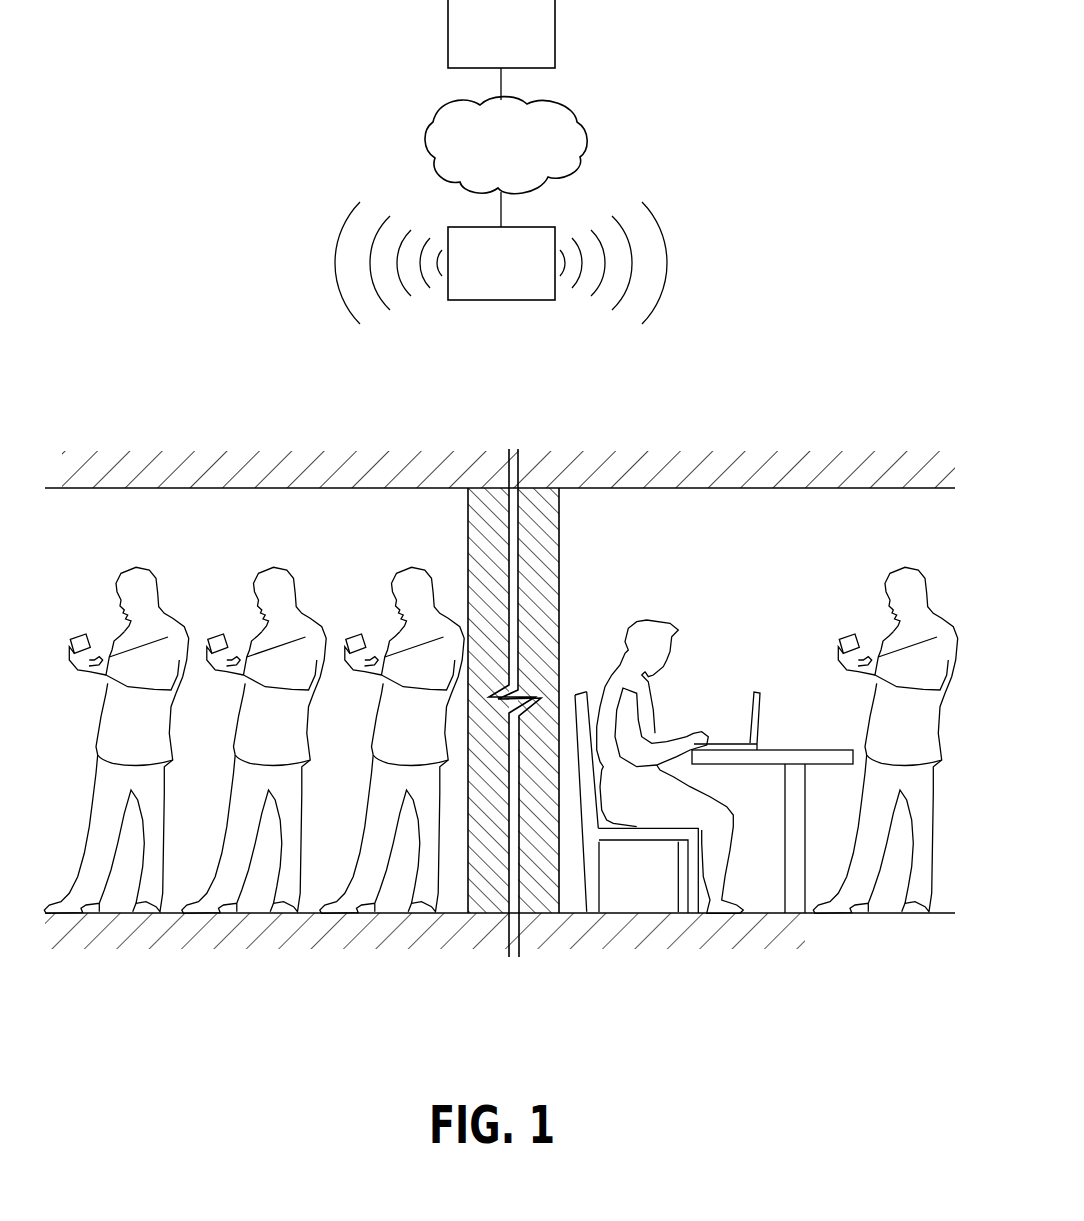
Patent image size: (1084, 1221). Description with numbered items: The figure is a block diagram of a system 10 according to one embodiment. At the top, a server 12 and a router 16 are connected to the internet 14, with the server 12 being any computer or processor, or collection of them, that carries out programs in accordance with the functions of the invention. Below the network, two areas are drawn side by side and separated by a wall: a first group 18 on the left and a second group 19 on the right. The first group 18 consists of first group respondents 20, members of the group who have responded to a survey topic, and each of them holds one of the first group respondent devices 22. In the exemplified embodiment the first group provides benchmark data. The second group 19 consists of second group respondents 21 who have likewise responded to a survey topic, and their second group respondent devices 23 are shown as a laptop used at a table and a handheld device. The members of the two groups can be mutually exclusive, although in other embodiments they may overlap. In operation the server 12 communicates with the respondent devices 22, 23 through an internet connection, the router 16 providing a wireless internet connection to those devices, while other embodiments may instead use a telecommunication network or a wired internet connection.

The system 10 is at (600, 162).
The server 12 is at (501, 34).
The internet 14 is at (506, 145).
The router 16 is at (501, 263).
The first group 18 is at (163, 518).
The second group 19 is at (882, 513).
The first group respondents 20 is at (155, 903).
The second group respondents 21 is at (712, 903).
The first group respondent devices 22 is at (90, 636).
The second group respondent devices 23 is at (760, 722).